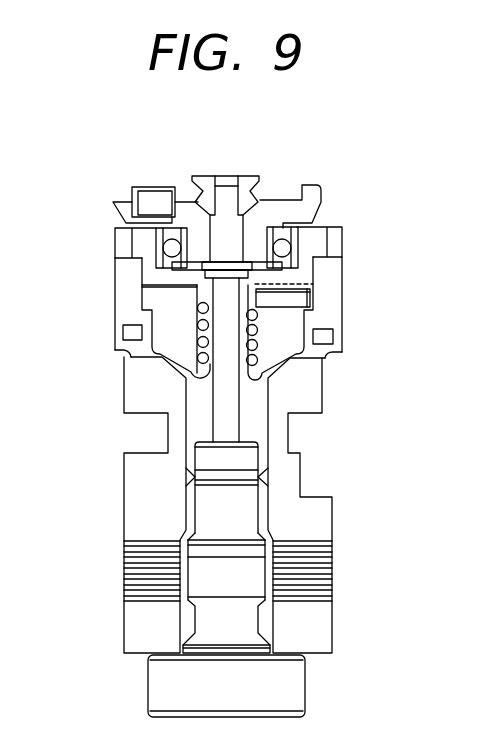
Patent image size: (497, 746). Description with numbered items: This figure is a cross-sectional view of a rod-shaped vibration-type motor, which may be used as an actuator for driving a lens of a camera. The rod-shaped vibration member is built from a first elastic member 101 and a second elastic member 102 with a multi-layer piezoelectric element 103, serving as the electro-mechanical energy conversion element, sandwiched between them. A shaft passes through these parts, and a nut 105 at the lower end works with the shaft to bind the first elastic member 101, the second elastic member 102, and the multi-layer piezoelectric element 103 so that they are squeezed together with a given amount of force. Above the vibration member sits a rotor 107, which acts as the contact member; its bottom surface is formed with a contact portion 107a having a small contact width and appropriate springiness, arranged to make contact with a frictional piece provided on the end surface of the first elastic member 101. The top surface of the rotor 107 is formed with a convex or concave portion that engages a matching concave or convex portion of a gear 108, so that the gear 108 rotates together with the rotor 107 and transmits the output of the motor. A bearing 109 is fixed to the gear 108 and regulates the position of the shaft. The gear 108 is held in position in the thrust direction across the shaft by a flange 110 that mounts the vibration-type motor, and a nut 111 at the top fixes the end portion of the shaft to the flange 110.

The first elastic member 101 is at (323, 513).
The second elastic member 102 is at (332, 623).
The multi-layer piezoelectric element 103 is at (332, 559).
The nut 105 is at (300, 689).
The rotor 107 is at (336, 303).
The contact portion 107a is at (322, 353).
The gear 108 is at (336, 240).
The bearing 109 is at (172, 250).
The flange 110 is at (318, 193).
The nut 111 is at (197, 175).